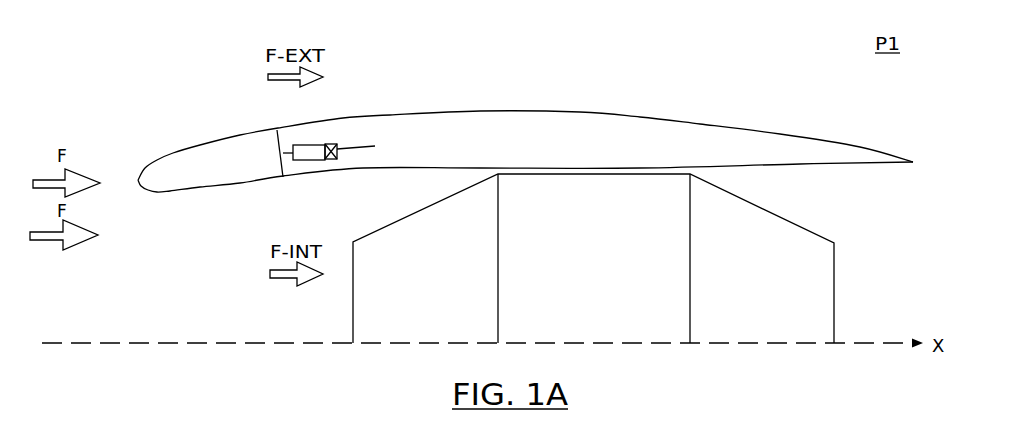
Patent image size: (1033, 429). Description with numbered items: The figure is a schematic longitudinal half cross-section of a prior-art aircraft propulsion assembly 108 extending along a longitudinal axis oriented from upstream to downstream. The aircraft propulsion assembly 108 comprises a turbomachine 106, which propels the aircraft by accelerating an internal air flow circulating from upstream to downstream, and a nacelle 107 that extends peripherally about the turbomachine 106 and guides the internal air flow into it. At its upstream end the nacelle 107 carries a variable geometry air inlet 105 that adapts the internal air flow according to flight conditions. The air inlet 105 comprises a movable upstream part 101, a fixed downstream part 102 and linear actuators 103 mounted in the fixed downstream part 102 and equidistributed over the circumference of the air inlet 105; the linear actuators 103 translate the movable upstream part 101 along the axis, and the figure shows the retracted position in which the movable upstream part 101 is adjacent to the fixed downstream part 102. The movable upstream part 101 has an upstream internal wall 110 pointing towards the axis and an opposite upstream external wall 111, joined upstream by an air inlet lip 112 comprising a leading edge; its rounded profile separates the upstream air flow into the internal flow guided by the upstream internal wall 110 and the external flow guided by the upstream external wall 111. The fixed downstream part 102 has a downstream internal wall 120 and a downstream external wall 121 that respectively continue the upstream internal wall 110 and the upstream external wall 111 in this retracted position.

The movable upstream part 101 is at (246, 134).
The fixed downstream part 102 is at (291, 125).
The linear actuators 103 is at (307, 163).
The variable geometry air inlet 105 is at (233, 67).
The turbomachine 106 is at (634, 167).
The nacelle 107 is at (604, 107).
The aircraft propulsion assembly 108 is at (720, 63).
The upstream internal wall 110 is at (198, 188).
The upstream external wall 111 is at (184, 148).
The air inlet lip 112 is at (137, 184).
The downstream internal wall 120 is at (347, 170).
The downstream external wall 121 is at (345, 117).